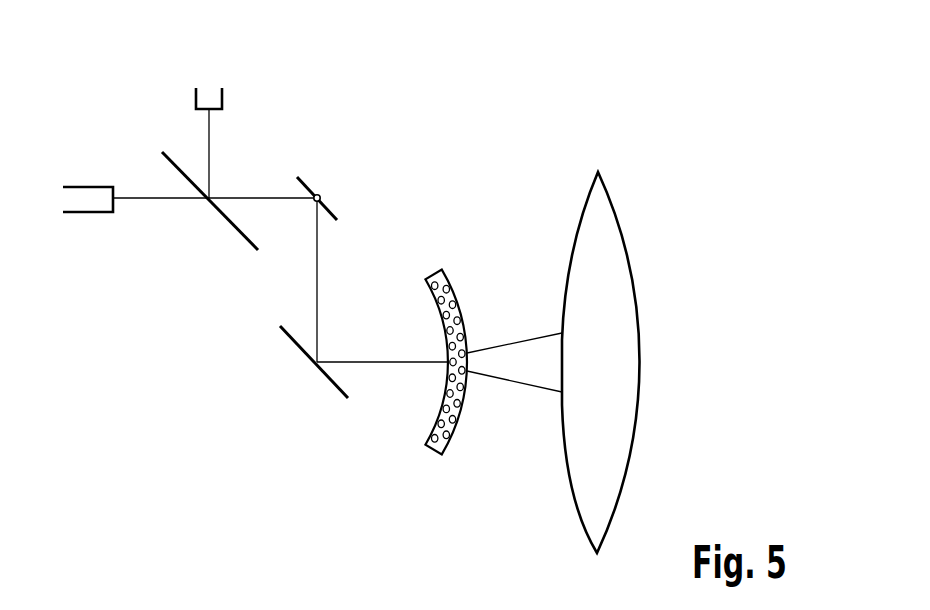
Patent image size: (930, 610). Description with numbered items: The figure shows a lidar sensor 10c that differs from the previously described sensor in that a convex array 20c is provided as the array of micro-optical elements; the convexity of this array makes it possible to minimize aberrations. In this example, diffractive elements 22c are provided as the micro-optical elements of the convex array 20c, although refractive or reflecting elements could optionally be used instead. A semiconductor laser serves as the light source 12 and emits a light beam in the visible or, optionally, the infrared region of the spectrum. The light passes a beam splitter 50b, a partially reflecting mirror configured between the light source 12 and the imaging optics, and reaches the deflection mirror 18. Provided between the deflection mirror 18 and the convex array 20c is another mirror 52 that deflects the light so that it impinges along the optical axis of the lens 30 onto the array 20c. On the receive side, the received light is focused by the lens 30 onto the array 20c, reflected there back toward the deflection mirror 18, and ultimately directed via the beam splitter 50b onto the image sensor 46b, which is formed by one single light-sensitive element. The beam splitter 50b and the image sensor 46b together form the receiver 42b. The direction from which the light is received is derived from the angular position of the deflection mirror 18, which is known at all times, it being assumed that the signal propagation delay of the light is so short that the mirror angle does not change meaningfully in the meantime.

The lidar sensor 10c is at (400, 107).
The light source 12 is at (85, 186).
The deflection mirror 18 is at (307, 182).
The convex array 20c is at (480, 311).
The diffractive elements 22c is at (431, 275).
The lens 30 is at (613, 200).
The receiver 42b is at (240, 103).
The image sensor 46b is at (208, 84).
The beam splitter 50b is at (230, 222).
The mirror 52 is at (300, 350).